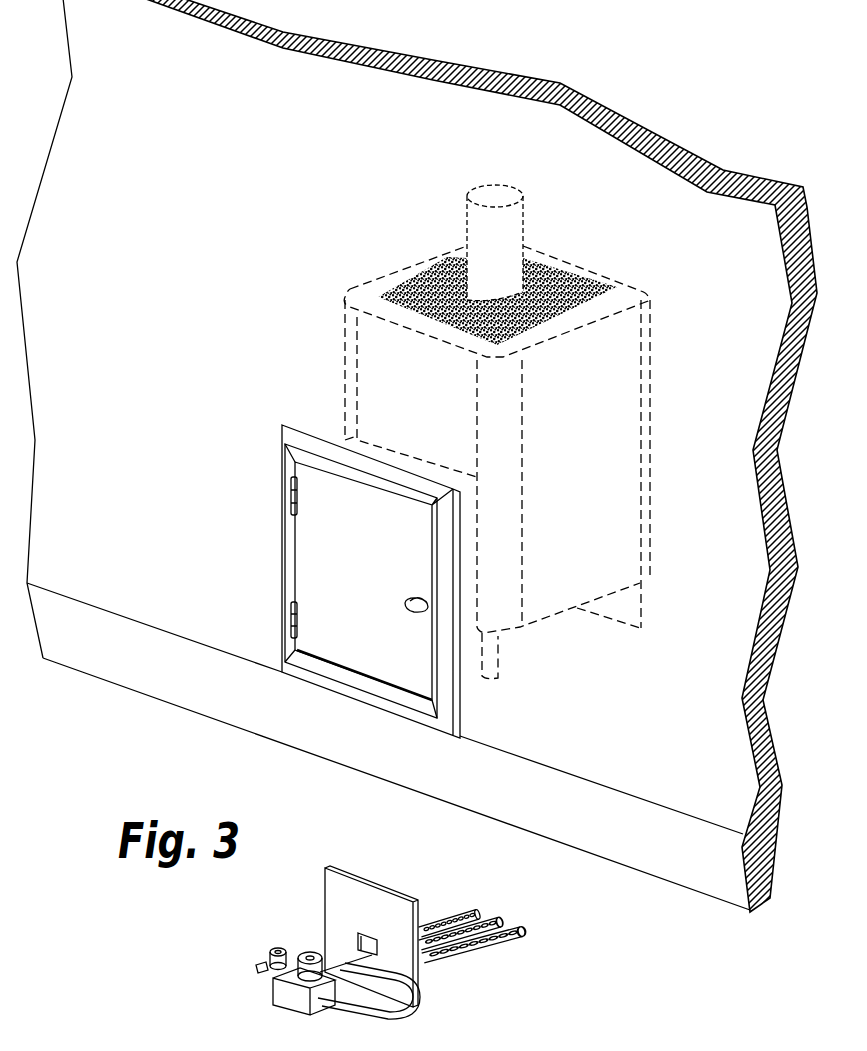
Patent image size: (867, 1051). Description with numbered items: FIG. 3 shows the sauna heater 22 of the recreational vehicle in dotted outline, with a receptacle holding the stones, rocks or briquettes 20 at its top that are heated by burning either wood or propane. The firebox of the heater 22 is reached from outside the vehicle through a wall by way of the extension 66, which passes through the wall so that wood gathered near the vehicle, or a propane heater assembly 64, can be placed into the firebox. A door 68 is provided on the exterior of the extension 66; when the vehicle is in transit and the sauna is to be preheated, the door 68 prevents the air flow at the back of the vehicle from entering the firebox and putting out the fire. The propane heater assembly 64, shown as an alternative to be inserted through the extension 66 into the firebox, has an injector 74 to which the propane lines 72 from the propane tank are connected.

The stones, rocks or briquettes 20 is at (552, 276).
The heater 22 is at (655, 433).
The propane heater assembly 64 is at (442, 977).
The extension 66 is at (412, 533).
The door 68 is at (333, 557).
The lines 72 is at (262, 978).
The injector 74 is at (278, 948).